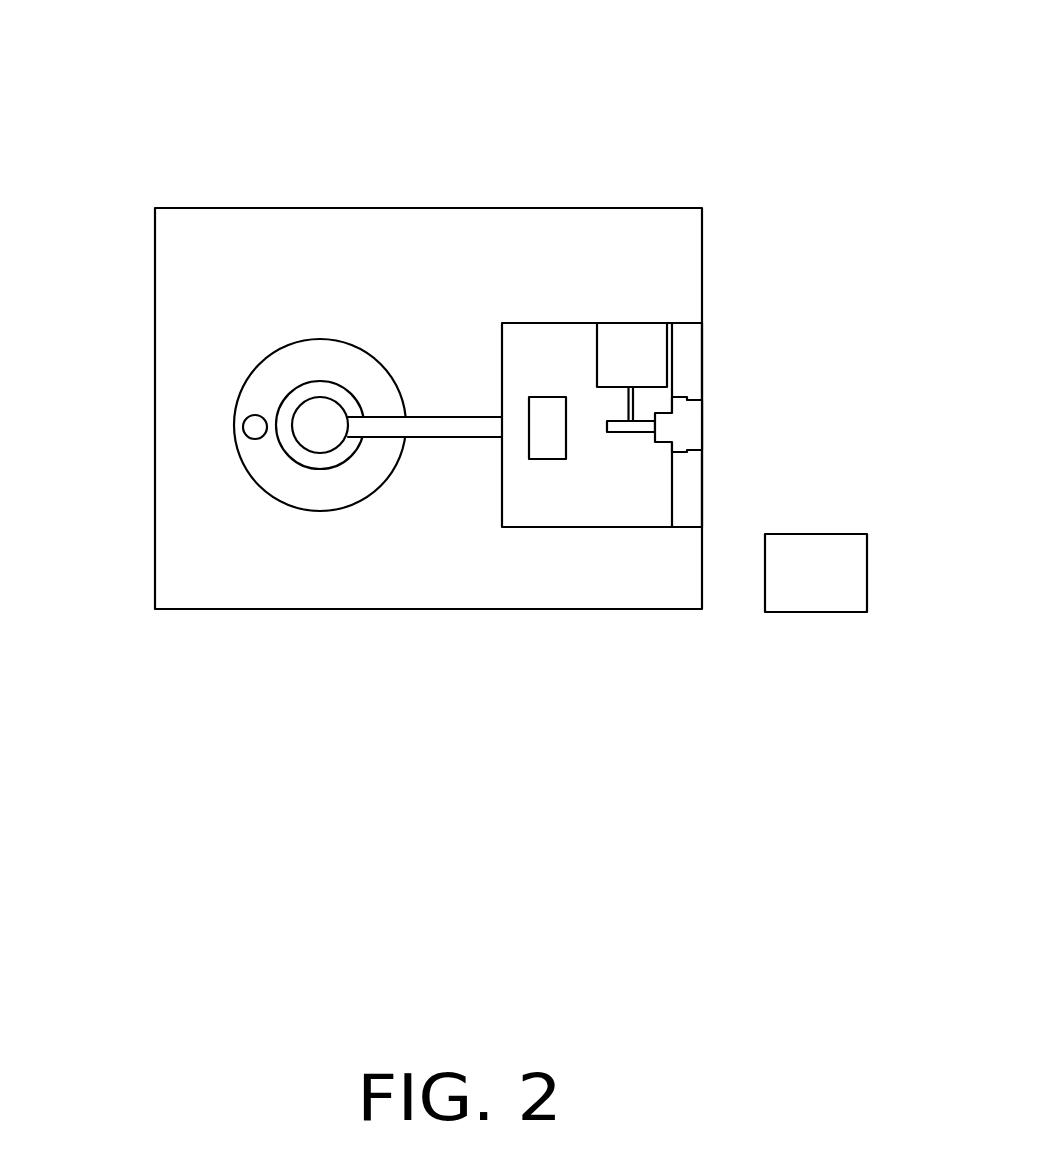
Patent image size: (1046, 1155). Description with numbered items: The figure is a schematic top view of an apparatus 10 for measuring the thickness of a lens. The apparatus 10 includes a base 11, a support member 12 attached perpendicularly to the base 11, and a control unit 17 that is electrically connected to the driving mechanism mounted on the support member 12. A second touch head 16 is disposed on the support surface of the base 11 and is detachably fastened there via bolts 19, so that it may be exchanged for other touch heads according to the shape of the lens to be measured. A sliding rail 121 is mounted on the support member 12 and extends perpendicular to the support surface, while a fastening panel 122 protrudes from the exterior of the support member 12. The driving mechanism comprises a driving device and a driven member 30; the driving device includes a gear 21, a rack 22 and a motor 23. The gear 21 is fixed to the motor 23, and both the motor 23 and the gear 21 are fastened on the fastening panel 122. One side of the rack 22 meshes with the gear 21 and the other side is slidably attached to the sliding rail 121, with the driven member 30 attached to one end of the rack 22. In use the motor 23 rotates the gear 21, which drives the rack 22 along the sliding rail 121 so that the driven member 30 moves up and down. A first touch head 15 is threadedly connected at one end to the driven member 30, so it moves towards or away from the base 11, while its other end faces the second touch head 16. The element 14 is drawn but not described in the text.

The apparatus 10 is at (499, 42).
The base 11 is at (352, 252).
The support member 12 is at (692, 503).
The sensor 14 is at (545, 440).
The first touch head 15 is at (285, 405).
The second touch head 16 is at (298, 362).
The control unit 17 is at (820, 548).
The bolts 19 is at (255, 425).
The gear 21 is at (644, 426).
The rack 22 is at (665, 425).
The motor 23 is at (643, 342).
The driven member 30 is at (457, 424).
The sliding rail 121 is at (678, 452).
The fastening panel 122 is at (543, 350).